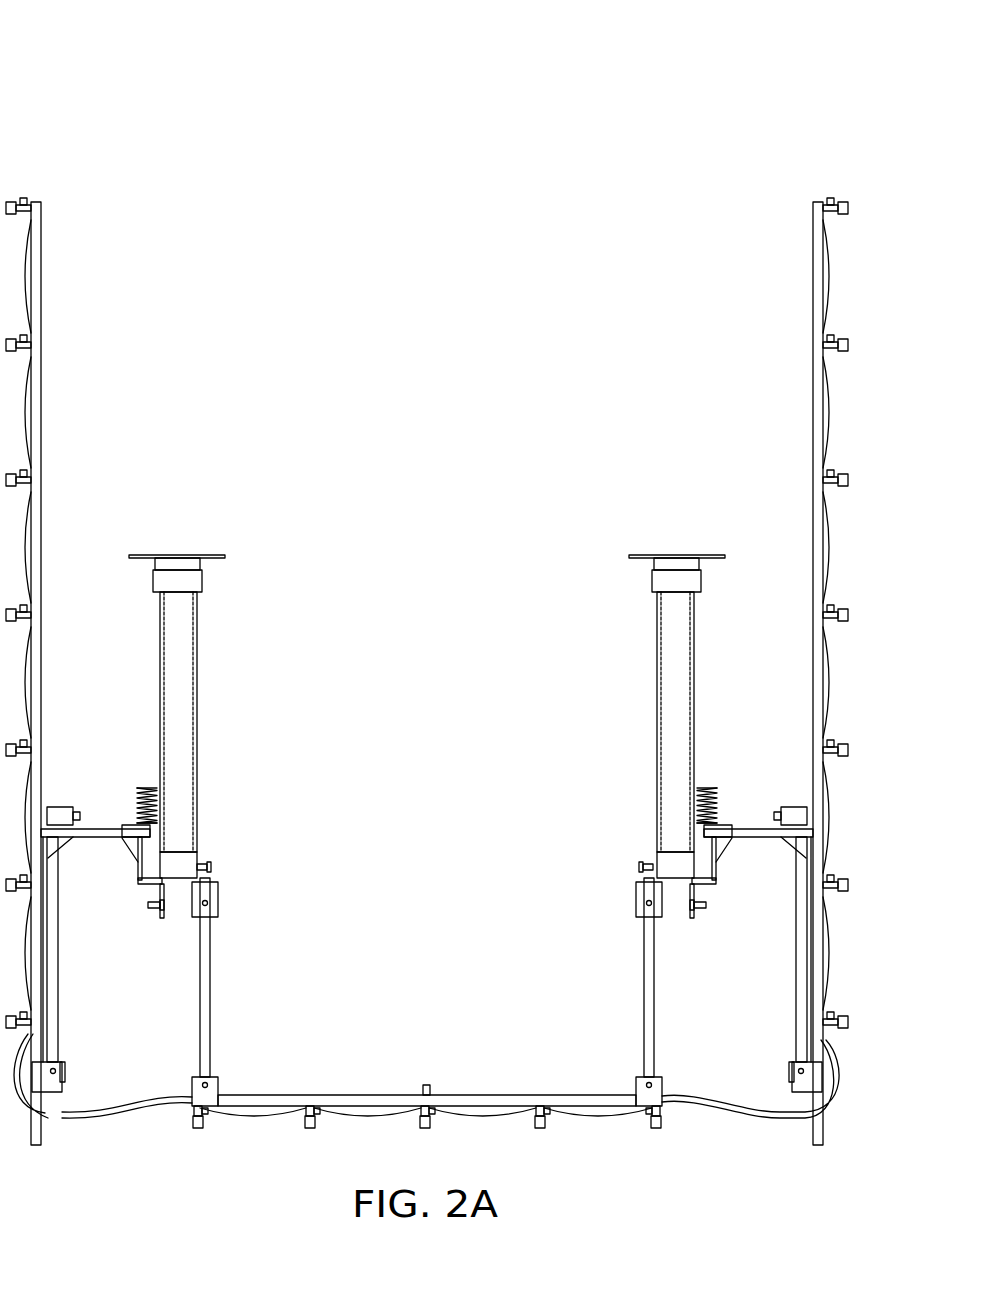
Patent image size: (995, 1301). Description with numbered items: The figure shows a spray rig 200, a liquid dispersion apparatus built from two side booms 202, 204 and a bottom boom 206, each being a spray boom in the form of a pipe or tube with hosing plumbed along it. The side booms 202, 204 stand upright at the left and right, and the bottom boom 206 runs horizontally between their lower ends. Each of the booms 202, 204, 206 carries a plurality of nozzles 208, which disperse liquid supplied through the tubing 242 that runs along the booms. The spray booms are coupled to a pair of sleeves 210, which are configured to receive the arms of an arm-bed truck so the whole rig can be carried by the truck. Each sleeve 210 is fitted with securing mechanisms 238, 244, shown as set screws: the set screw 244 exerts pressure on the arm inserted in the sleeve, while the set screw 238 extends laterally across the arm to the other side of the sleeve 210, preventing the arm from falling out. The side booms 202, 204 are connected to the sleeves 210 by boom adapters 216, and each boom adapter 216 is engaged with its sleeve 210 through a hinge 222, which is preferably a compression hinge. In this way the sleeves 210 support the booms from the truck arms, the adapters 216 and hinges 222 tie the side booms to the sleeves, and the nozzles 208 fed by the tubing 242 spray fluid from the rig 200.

The spray rig 200 is at (82, 74).
The side boom 202 is at (41, 216).
The side boom 204 is at (812, 216).
The bottom boom 206 is at (486, 1095).
The nozzle 208 is at (848, 347).
The sleeve 210 is at (171, 546).
The boom adapter 216 is at (80, 912).
The hinge 222 is at (132, 793).
The securing mechanism 238 is at (212, 868).
The tubing 242 is at (748, 1120).
The securing mechanism 244 is at (701, 910).